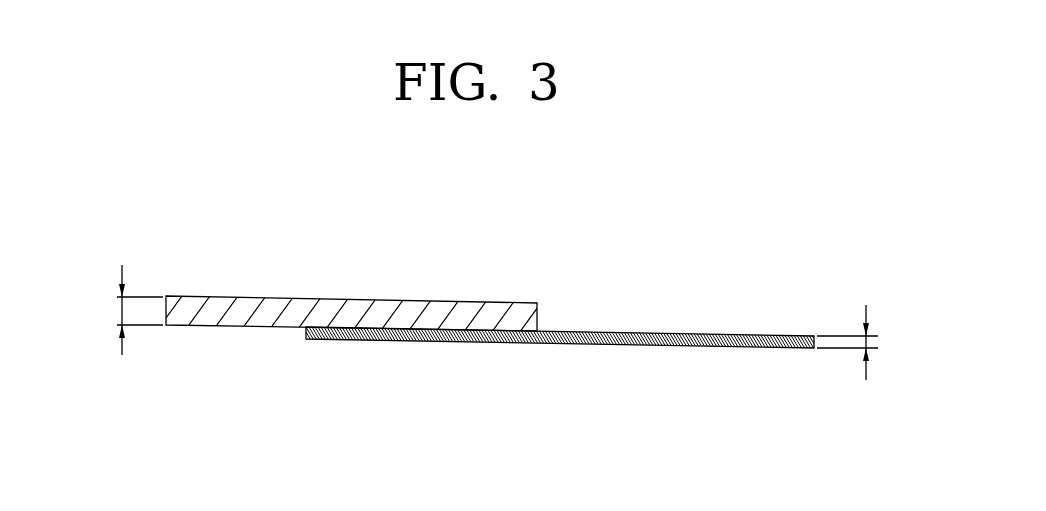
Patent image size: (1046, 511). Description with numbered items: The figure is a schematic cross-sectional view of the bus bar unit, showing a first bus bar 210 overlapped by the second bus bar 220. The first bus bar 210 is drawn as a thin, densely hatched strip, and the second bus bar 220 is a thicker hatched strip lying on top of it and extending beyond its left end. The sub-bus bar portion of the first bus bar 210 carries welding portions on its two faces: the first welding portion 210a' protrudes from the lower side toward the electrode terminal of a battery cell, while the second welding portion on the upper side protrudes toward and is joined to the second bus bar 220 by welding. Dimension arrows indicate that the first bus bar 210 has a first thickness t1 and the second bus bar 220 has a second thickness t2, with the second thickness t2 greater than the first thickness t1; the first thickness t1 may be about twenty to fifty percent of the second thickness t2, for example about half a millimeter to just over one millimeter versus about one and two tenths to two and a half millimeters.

The second bus bar 220 is at (300, 307).
The first bus bar 210 is at (563, 345).
The first welding portion 210a' is at (706, 407).
The first thickness t1 is at (860, 342).
The second thickness t2 is at (127, 310).